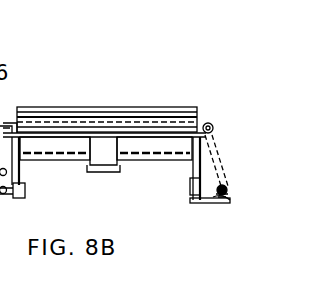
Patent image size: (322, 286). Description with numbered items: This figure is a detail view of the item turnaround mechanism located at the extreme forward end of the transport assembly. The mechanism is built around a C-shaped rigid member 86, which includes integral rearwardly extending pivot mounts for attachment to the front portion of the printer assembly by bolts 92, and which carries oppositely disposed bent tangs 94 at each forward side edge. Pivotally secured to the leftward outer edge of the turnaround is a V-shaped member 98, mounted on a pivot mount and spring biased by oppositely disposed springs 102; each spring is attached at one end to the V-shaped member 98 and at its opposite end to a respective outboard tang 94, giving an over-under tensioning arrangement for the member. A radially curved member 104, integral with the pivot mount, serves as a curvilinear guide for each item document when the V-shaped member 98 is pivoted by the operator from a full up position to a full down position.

The V-shaped member 98 is at (188, 107).
The C-shaped rigid member 86 is at (186, 136).
The radially curved member 104 is at (100, 172).
The springs 102 is at (223, 183).
The bolts 92 is at (228, 190).
The bent tangs 94 is at (222, 203).